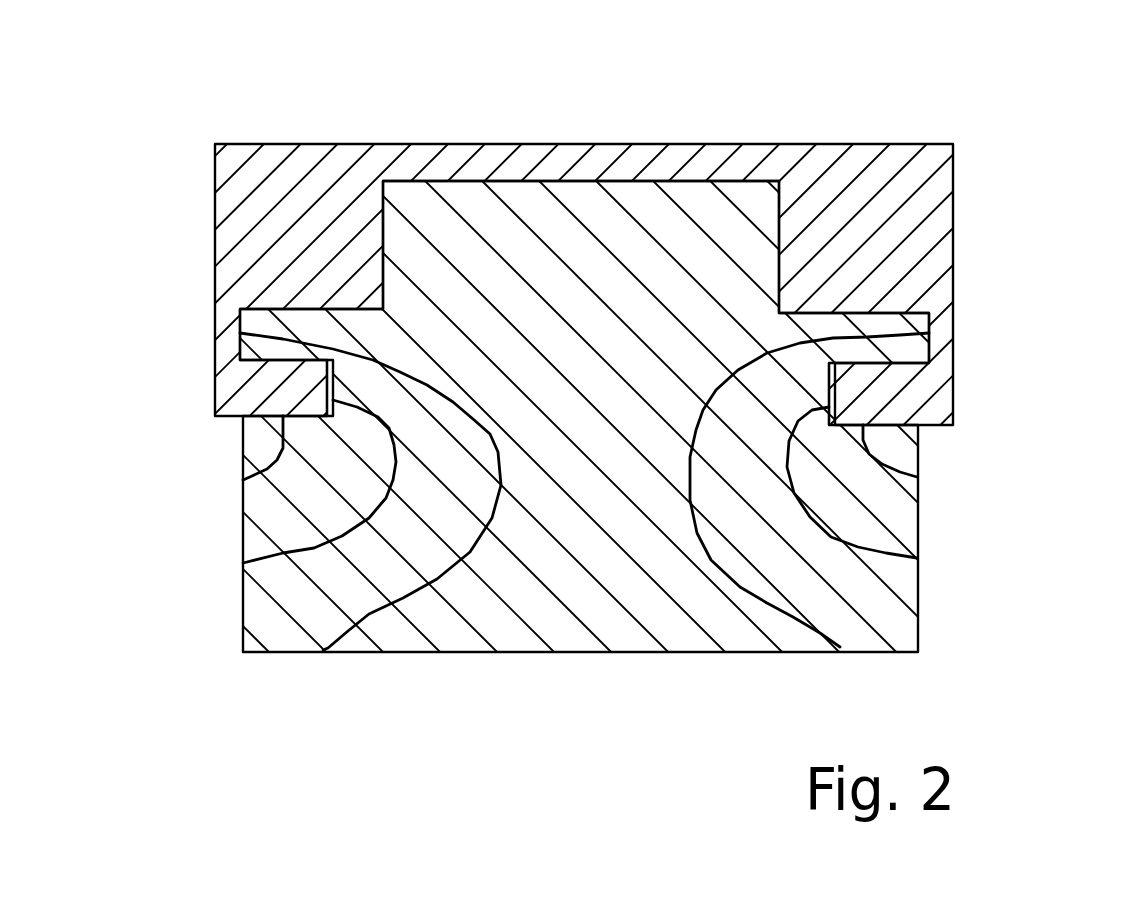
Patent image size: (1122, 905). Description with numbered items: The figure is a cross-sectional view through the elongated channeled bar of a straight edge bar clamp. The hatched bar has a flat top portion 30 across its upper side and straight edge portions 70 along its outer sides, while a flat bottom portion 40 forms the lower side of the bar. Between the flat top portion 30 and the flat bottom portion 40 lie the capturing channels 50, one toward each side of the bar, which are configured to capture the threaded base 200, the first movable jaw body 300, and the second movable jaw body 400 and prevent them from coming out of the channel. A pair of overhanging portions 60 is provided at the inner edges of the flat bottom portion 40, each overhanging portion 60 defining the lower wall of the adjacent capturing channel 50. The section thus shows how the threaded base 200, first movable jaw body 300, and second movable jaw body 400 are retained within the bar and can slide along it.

The flat top portion 30 is at (590, 144).
The straight edge portion 70 is at (215, 211).
The flat bottom portion 40 is at (243, 480).
The capturing channel 50 is at (323, 650).
The overhanging portion 60 is at (243, 563).
The threaded base 200 is at (700, 650).
The first movable jaw body 300 is at (561, 464).
The second movable jaw body 400 is at (561, 464).